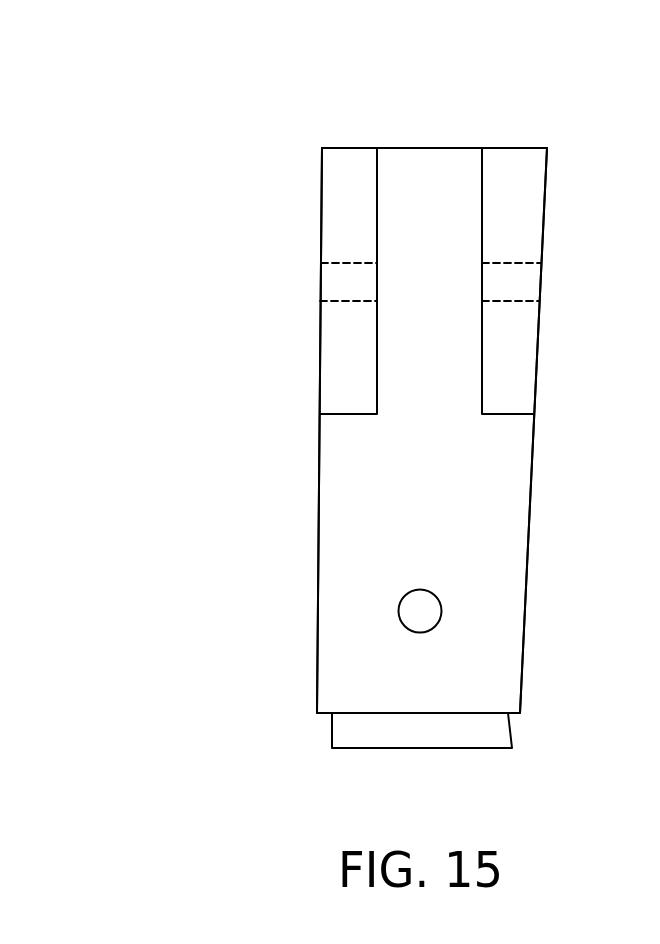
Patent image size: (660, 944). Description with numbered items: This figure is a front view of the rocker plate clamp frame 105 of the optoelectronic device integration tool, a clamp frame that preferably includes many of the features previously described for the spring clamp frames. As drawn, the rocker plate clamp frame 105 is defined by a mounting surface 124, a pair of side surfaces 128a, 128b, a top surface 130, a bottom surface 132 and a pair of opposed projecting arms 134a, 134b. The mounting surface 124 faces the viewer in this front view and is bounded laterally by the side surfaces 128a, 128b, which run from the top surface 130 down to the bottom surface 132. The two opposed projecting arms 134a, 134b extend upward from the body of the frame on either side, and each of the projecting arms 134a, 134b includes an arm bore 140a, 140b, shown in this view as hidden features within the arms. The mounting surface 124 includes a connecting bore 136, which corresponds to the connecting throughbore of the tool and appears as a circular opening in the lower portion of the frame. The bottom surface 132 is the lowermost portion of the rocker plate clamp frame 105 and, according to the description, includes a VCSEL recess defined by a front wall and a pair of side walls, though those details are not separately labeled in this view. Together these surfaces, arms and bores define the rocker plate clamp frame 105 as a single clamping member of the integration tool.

The rocker plate clamp frame 105 is at (360, 76).
The mounting surface 124 is at (480, 573).
The top surface 130 is at (427, 148).
The side surface 128a is at (533, 453).
The side surface 128b is at (318, 503).
The projecting arm 134a is at (522, 203).
The projecting arm 134b is at (343, 201).
The arm bore 140a is at (513, 285).
The arm bore 140b is at (352, 285).
The connecting bore 136 is at (418, 612).
The bottom surface 132 is at (385, 748).